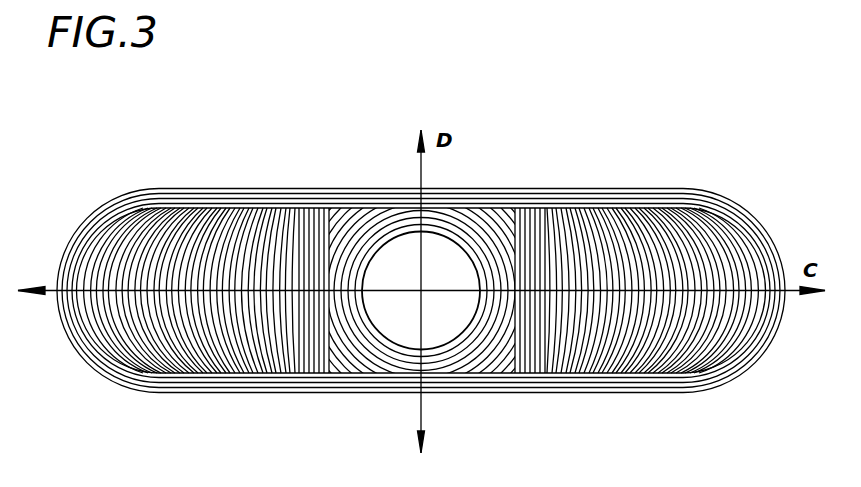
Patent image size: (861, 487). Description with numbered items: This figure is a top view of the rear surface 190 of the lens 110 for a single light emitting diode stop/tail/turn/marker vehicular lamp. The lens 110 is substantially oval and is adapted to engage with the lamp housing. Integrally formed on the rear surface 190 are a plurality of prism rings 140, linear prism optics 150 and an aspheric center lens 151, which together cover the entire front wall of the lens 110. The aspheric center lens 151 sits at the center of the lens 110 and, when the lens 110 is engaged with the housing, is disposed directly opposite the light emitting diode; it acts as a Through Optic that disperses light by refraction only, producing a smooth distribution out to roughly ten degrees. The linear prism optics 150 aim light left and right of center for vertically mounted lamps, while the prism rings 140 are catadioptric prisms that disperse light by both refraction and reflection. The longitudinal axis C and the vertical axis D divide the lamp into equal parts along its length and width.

The lens 110 is at (100, 176).
The prism rings 140 is at (723, 227).
The linear prism optics 150 is at (313, 210).
The aspheric center lens 151 is at (433, 260).
The rear surface 190 is at (367, 353).